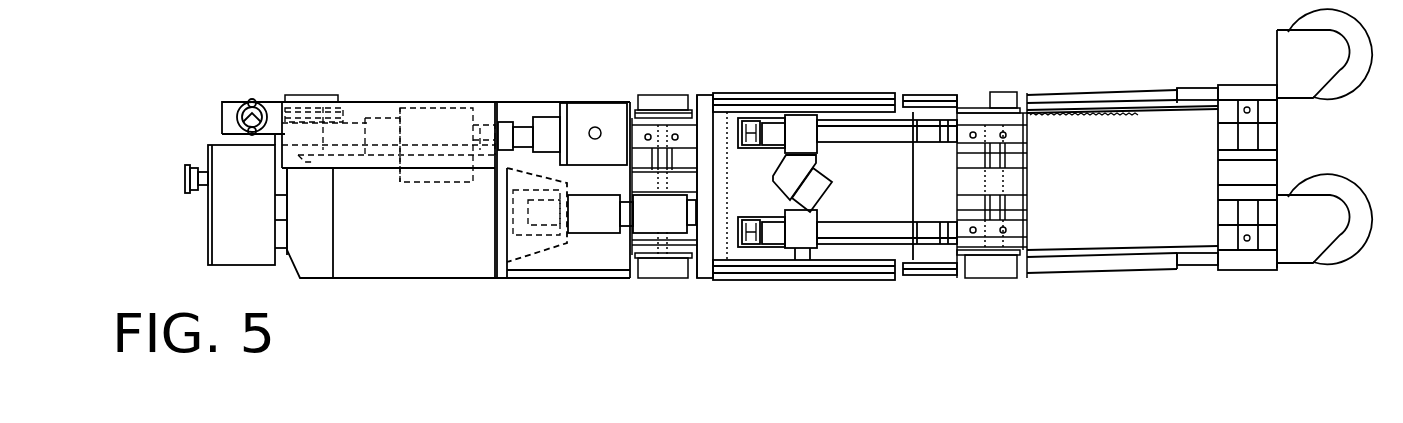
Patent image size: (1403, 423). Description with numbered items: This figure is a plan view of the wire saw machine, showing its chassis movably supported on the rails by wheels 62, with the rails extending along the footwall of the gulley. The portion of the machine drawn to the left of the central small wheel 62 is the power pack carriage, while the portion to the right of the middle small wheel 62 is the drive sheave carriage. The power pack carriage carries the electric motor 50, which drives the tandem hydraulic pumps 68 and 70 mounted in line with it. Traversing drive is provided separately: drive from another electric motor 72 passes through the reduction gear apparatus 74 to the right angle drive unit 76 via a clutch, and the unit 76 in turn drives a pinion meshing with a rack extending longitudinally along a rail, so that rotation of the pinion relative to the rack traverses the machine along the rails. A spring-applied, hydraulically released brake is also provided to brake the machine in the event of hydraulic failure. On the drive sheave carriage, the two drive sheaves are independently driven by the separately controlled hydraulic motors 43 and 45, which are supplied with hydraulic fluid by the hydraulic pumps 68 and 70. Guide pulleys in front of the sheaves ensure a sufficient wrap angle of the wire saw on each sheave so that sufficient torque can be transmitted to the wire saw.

The hydraulic motor 43 is at (800, 162).
The hydraulic motor 45 is at (812, 192).
The electric motor 50 is at (411, 226).
The wheels 62 is at (318, 100).
The hydraulic pump 68 is at (607, 227).
The hydraulic pump 70 is at (671, 227).
The electric motor 72 is at (382, 107).
The reduction gear apparatus 74 is at (447, 107).
The right angle drive unit 76 is at (583, 115).